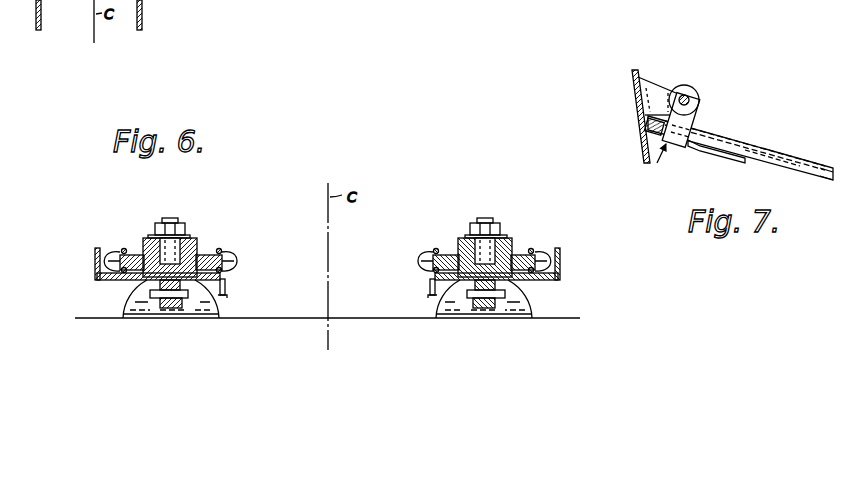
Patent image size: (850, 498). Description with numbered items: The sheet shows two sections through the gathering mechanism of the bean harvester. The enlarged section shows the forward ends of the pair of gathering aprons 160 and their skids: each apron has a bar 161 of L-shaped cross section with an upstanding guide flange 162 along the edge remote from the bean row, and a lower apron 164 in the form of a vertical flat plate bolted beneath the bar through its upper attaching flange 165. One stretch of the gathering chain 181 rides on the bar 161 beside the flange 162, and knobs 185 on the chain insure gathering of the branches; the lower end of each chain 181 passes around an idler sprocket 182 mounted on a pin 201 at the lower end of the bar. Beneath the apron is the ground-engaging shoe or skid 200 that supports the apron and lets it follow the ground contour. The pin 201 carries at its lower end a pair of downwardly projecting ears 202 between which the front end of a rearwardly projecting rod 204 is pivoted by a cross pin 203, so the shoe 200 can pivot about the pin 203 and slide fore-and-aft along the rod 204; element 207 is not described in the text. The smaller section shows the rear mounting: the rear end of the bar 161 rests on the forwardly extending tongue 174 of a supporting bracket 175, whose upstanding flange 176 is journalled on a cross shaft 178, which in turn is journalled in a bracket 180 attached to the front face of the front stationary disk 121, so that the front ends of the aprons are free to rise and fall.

In FIG. 7, the front stationary disk 121 is at (642, 152).
In FIG. 6, the gathering apron 160 is at (35, 12).
In FIG. 6, the bar 161 is at (112, 281).
In FIG. 7, the bar 161 is at (772, 164).
In FIG. 6, the upstanding guide flange 162 is at (96, 262).
In FIG. 7, the upstanding guide flange 162 is at (785, 148).
In FIG. 6, the lower apron 164 is at (227, 284).
In FIG. 6, the upper attaching flange 165 is at (228, 296).
In FIG. 7, the forwardly extending tongue 174 is at (720, 156).
In FIG. 7, the supporting bracket 175 is at (671, 163).
In FIG. 7, the upstanding flange 176 is at (672, 93).
In FIG. 7, the cross shaft 178 is at (692, 97).
In FIG. 7, the bracket 180 is at (650, 78).
In FIG. 6, the chain 181 is at (220, 248).
In FIG. 7, the chain 181 is at (824, 170).
In FIG. 6, the idler sprocket 182 is at (200, 248).
In FIG. 6, the knobs 185 is at (240, 256).
In FIG. 6, the shoe 200 is at (128, 300).
In FIG. 6, the pin 201 is at (170, 217).
In FIG. 6, the ears 202 is at (178, 305).
In FIG. 6, the cross pin 203 is at (190, 296).
In FIG. 6, the rod 204 is at (170, 300).
In FIG. 6, the nut 207 is at (484, 300).